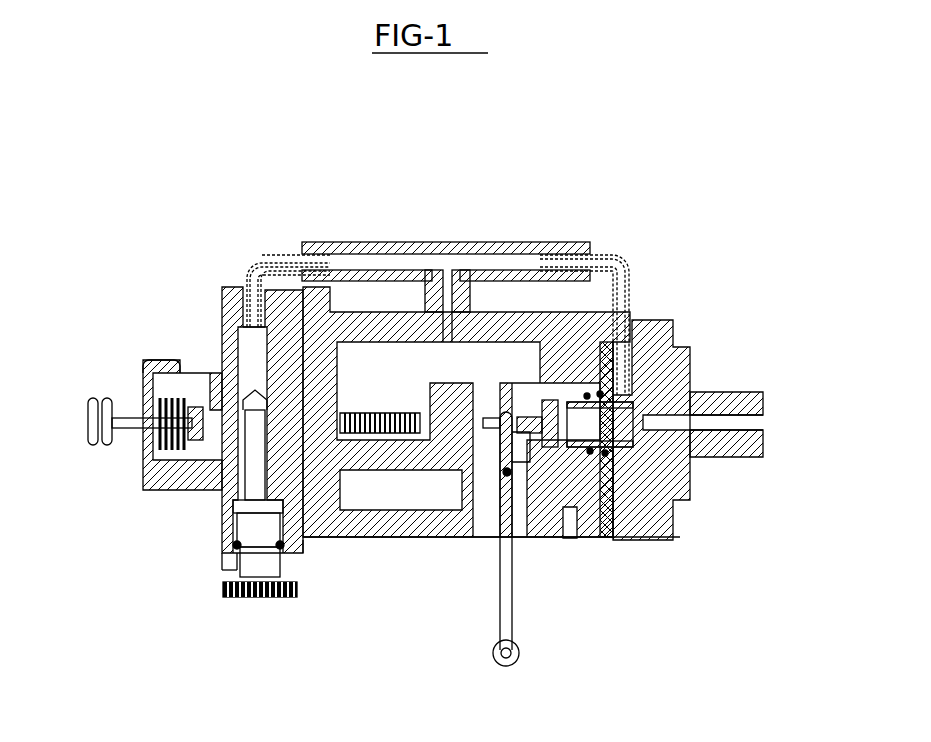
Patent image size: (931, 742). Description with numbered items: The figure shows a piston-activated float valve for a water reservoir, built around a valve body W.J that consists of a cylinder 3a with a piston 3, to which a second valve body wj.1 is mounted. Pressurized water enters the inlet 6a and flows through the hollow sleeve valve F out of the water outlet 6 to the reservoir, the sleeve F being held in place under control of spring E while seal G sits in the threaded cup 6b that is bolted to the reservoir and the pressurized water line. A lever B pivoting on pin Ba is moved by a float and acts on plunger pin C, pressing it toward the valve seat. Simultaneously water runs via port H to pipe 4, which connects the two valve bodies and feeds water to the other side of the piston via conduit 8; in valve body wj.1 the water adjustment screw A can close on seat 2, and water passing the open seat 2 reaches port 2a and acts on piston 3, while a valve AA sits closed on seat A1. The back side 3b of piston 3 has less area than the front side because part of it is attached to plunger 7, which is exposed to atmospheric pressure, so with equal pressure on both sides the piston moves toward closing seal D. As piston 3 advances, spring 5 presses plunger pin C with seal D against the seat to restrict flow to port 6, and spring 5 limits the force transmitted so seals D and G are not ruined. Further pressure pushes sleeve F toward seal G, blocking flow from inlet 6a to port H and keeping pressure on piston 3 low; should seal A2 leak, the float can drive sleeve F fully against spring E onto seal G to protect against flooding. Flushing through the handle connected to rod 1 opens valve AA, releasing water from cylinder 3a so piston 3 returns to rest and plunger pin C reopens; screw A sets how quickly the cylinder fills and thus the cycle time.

The rod 1 is at (92, 448).
The seat 2 is at (242, 385).
The port 2a is at (180, 370).
The piston 3 is at (302, 370).
The cylinder 3a is at (222, 288).
The back side of piston 3b is at (360, 360).
The pipe 4 is at (367, 242).
The spring 5 is at (363, 443).
The water outlet 6 is at (571, 540).
The inlet 6a is at (717, 417).
The threaded cup 6b is at (737, 453).
The plunger 7 is at (383, 450).
The conduit 8 is at (450, 285).
The water adjustment screw A is at (240, 598).
The seat A1 is at (212, 474).
The seal A2 is at (310, 557).
The valve AA is at (212, 455).
The lever B is at (515, 628).
The pin Ba is at (531, 535).
The plunger pin C is at (540, 398).
The seal D is at (575, 535).
The spring E is at (598, 458).
The hollow valve (sleeve) F is at (602, 452).
The seal G is at (655, 445).
The port H is at (630, 297).
The valve body W.J is at (500, 570).
The valve body wj.1 is at (225, 472).